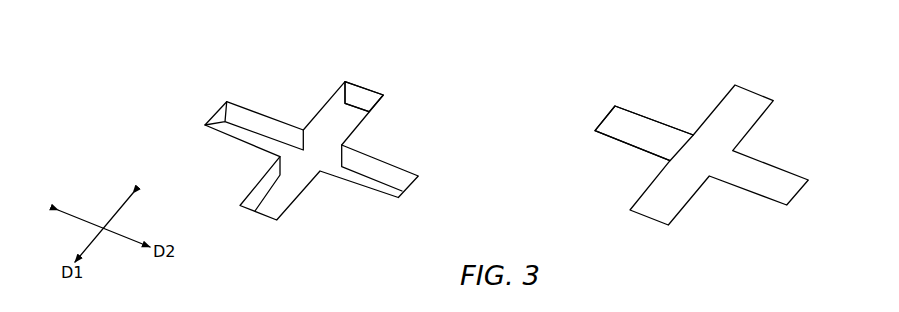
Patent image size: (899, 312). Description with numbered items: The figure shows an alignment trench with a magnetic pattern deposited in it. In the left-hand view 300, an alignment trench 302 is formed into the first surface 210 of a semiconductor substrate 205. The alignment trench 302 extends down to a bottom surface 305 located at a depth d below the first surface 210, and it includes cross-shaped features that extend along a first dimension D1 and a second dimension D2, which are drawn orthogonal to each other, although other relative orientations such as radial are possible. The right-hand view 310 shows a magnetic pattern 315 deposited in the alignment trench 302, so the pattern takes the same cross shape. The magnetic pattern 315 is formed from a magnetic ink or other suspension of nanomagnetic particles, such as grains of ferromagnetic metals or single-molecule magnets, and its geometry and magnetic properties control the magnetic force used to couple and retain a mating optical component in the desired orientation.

The view 300 is at (228, 72).
The alignment trench 302 is at (358, 90).
The bottom surface 305 is at (318, 153).
The semiconductor substrate 205 is at (406, 80).
The first surface 210 is at (415, 113).
The view 310 is at (651, 67).
The magnetic pattern 315 is at (632, 133).